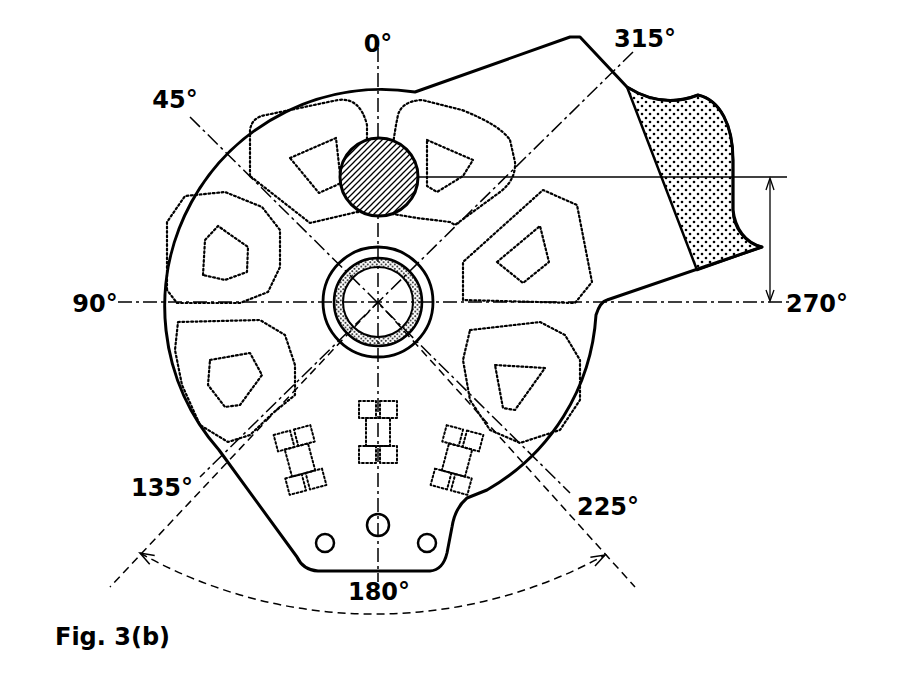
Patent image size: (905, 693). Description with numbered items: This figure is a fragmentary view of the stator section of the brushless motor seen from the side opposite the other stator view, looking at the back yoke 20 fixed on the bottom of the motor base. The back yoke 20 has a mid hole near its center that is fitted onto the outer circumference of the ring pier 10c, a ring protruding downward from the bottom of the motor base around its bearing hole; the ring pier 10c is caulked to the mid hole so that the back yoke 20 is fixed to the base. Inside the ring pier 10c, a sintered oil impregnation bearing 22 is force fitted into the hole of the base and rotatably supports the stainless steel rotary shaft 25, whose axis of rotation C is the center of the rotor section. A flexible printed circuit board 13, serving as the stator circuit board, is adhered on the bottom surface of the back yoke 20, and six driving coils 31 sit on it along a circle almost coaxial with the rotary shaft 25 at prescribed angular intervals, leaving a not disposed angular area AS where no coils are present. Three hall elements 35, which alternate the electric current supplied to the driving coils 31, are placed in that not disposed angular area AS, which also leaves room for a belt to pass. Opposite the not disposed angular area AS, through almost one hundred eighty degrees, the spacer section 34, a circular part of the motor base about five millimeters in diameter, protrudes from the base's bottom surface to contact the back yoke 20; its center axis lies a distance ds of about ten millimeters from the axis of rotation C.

The flexible printed circuit board 13 is at (667, 112).
The back yoke 20 is at (533, 93).
The sintered oil impregnation bearing 22 is at (330, 275).
The rotary shaft 25 is at (345, 262).
The driving coil 31 is at (550, 398).
The spacer section 34 is at (366, 150).
The hall element 35 is at (287, 457).
The ring pier 10c is at (337, 330).
The axis of rotation C is at (374, 304).
The not disposed angular area AS is at (372, 599).
The distance ds is at (573, 239).